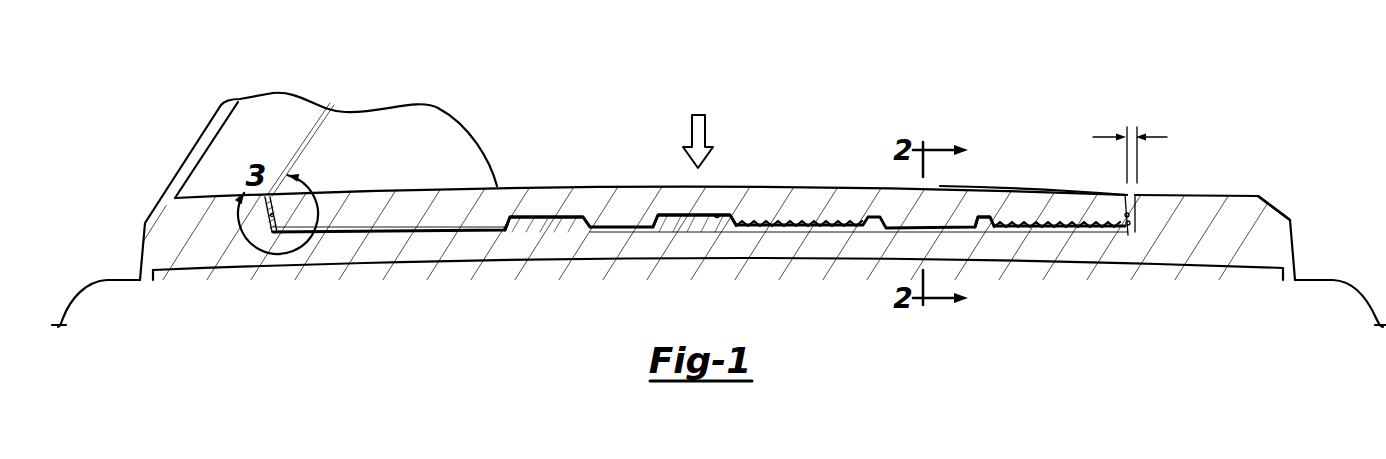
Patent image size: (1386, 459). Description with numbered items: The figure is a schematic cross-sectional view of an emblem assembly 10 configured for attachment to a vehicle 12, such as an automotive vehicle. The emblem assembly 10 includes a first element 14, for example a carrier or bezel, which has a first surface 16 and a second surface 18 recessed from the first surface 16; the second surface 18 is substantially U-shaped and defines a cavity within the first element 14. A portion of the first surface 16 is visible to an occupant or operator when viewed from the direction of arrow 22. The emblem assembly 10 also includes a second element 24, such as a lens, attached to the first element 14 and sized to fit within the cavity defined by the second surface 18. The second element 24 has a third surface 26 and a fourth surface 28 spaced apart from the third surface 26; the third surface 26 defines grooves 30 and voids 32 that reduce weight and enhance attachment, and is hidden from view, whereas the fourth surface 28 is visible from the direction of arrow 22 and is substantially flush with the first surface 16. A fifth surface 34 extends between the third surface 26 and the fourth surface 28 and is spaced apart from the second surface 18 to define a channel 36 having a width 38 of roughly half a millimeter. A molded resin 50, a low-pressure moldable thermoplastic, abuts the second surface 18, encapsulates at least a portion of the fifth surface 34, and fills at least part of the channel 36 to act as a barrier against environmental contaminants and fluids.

The emblem assembly 10 is at (150, 173).
The vehicle 12 is at (1369, 290).
The first element 14 is at (1292, 191).
The first surface 16 is at (273, 113).
The second surface 18 is at (262, 232).
The arrow 22 is at (705, 128).
The second element 24 is at (1017, 181).
The third surface 26 is at (443, 237).
The fourth surface 28 is at (397, 128).
The grooves 30 is at (837, 223).
The voids 32 is at (567, 223).
The fifth surface 34 is at (274, 215).
The channel 36 is at (268, 180).
The width 38 is at (1162, 137).
The molded resin 50 is at (670, 216).